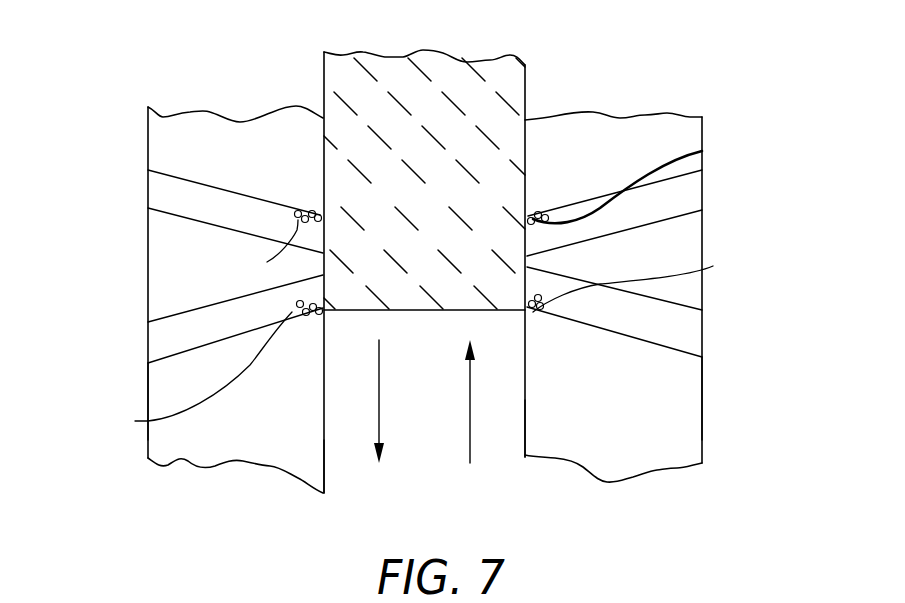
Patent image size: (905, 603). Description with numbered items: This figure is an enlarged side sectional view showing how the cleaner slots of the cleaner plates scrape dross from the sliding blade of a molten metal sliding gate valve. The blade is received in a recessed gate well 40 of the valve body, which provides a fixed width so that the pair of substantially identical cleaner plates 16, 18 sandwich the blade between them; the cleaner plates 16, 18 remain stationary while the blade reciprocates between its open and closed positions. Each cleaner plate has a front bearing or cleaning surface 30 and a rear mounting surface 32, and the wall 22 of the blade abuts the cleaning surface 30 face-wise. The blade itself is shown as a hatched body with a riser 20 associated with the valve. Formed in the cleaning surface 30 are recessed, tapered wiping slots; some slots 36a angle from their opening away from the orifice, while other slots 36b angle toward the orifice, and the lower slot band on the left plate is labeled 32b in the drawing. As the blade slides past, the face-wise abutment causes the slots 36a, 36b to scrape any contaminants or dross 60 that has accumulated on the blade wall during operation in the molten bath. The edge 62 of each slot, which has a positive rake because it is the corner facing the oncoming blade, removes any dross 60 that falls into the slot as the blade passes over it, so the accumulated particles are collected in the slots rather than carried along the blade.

The cleaner plate 16 is at (163, 240).
The cleaner plate 18 is at (687, 297).
The riser 20 is at (325, 140).
The wall 22 is at (525, 134).
The front bearing or cleaning surface 30 is at (324, 462).
The rear mounting surface 32 is at (148, 381).
The lower layer band 32b is at (163, 335).
The cleaning slot 36a is at (163, 190).
The cleaning slot 36b is at (688, 334).
The recessed gate well 40 is at (408, 402).
The dross 60 is at (435, 287).
The edge of slot 62 is at (318, 211).